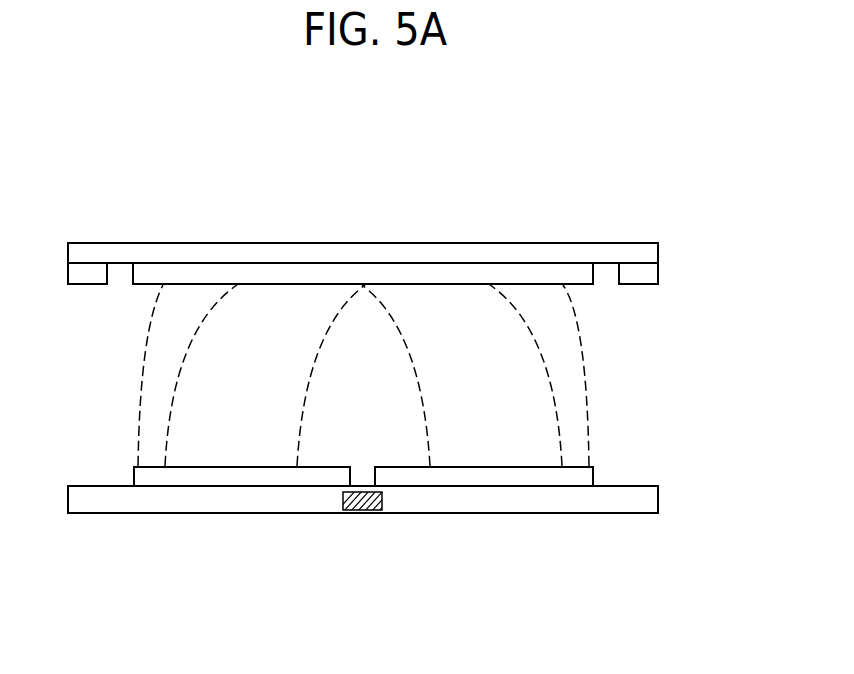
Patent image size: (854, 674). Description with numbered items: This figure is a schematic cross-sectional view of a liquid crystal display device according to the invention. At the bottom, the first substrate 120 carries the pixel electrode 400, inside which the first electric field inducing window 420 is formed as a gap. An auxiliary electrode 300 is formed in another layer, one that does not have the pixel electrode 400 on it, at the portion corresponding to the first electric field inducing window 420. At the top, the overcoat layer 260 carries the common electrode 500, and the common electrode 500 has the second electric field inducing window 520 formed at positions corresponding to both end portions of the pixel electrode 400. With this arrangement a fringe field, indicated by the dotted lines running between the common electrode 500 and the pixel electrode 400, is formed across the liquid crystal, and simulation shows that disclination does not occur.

The first substrate 120 is at (652, 498).
The overcoat layer 260 is at (652, 255).
The auxiliary electrode 300 is at (365, 502).
The pixel electrode 400 is at (517, 478).
The first electric field inducing window 420 is at (358, 475).
The common electrode 500 is at (362, 272).
The second electric field inducing window 520 is at (607, 280).